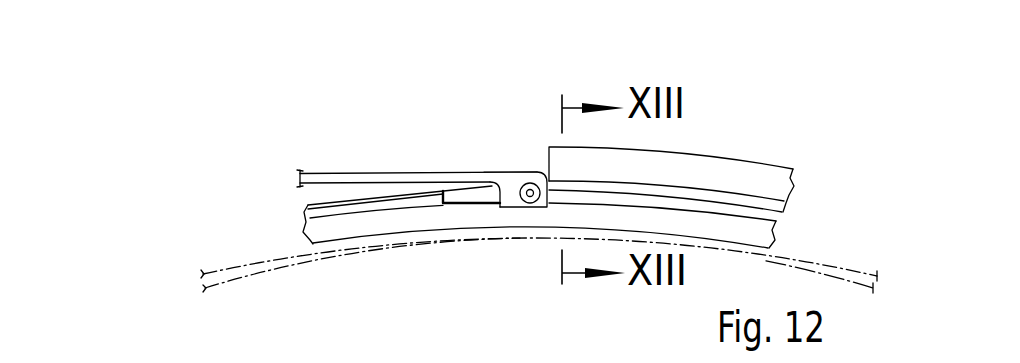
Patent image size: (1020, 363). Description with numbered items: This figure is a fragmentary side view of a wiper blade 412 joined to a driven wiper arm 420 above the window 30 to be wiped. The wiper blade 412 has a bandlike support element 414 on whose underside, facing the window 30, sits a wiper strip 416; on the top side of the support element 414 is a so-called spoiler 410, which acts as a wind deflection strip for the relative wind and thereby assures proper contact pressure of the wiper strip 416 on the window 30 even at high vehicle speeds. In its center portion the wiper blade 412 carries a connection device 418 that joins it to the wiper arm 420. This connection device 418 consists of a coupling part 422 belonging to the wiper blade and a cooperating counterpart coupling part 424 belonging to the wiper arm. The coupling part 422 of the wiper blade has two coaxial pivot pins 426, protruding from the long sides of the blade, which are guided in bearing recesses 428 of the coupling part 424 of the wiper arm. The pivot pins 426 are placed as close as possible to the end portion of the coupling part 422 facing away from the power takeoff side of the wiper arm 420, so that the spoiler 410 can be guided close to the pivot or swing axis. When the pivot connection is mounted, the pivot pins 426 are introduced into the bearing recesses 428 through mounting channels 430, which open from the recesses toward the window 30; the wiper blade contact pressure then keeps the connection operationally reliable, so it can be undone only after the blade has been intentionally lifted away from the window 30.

The window 30 is at (282, 266).
The spoiler 410 is at (748, 170).
The wiper blade 412 is at (674, 144).
The support element 414 is at (332, 198).
The wiper strip 416 is at (766, 215).
The connection device 418 is at (490, 161).
The wiper arm 420 is at (396, 172).
The coupling part of the wiper blade 422 is at (485, 192).
The coupling part of the wiper arm 424 is at (508, 180).
The pivot pins 426 is at (528, 205).
The bearing recesses 428 is at (525, 180).
The mounting channels 430 is at (523, 205).